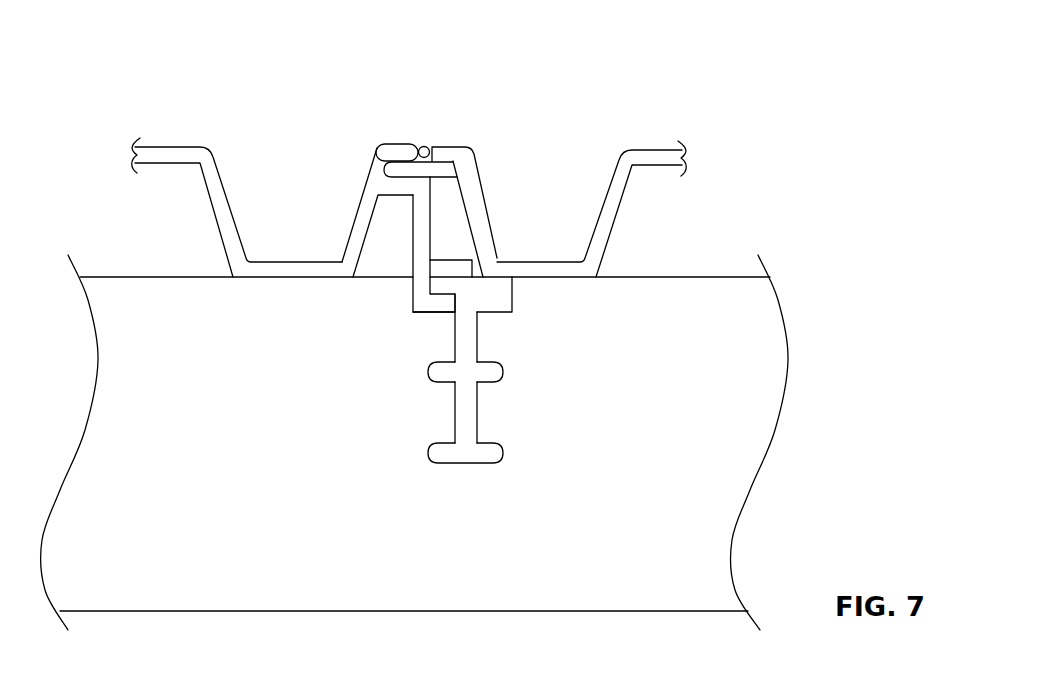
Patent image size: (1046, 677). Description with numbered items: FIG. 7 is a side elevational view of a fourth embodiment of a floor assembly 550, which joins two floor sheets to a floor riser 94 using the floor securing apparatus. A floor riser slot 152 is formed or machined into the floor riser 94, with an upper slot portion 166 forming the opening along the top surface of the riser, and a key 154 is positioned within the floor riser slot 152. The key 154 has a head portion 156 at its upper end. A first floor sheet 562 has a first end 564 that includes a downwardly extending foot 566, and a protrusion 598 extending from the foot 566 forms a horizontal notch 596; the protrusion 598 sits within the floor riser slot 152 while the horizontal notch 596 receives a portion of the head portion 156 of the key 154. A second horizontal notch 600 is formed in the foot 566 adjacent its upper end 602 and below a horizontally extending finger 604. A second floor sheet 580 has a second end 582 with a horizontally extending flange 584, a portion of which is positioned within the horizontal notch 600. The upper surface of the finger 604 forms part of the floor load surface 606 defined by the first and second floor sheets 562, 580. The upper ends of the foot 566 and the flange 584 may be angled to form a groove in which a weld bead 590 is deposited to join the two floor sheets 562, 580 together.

The floor riser 94 is at (718, 277).
The floor riser slot 152 is at (424, 388).
The key 154 is at (465, 455).
The head portion 156 is at (496, 305).
The upper slot portion 166 is at (400, 301).
The floor assembly 550 is at (345, 60).
The first floor sheet 562 is at (357, 218).
The first end 564 is at (387, 144).
The downwardly extending foot 566 is at (417, 251).
The second floor sheet 580 is at (627, 157).
The second end 582 is at (466, 148).
The horizontally extending flange 584 is at (382, 167).
The weld bead 590 is at (428, 145).
The horizontal notch 596 is at (478, 289).
The protrusion 598 is at (440, 305).
The horizontal notch 600 is at (447, 178).
The upper end 602 is at (377, 147).
The horizontally extending finger 604 is at (403, 144).
The floor load surface 606 is at (163, 147).